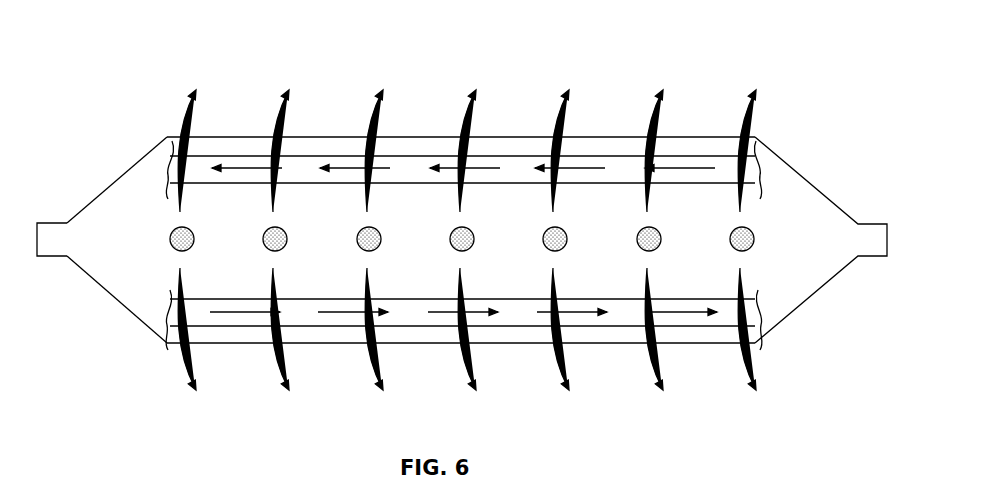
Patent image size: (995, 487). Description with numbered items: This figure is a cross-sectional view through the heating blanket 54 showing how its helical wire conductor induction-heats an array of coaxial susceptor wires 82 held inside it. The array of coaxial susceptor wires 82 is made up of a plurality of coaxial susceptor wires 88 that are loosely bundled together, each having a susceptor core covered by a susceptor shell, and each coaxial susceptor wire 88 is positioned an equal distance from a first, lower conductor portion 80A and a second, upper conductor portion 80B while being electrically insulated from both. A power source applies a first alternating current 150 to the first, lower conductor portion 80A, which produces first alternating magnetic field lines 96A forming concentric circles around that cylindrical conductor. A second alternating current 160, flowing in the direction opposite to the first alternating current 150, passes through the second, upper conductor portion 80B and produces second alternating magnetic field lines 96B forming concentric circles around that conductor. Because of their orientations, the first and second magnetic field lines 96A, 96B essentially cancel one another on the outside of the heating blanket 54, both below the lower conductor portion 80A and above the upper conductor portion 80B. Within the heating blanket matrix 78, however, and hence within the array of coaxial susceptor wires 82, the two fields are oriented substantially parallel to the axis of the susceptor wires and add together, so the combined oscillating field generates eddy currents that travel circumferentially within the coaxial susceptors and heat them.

The heating blanket 54 is at (634, 50).
The heating blanket matrix 78 is at (606, 218).
The first, lower conductor portion 80A is at (763, 316).
The second, upper conductor portion 80B is at (766, 152).
The array of coaxial susceptor wires 82 is at (467, 233).
The coaxial susceptor wire 88 is at (194, 240).
The first alternating magnetic field lines 96A is at (737, 360).
The second alternating magnetic field lines 96B is at (184, 126).
The first alternating current 150 is at (404, 320).
The second alternating current 160 is at (412, 157).